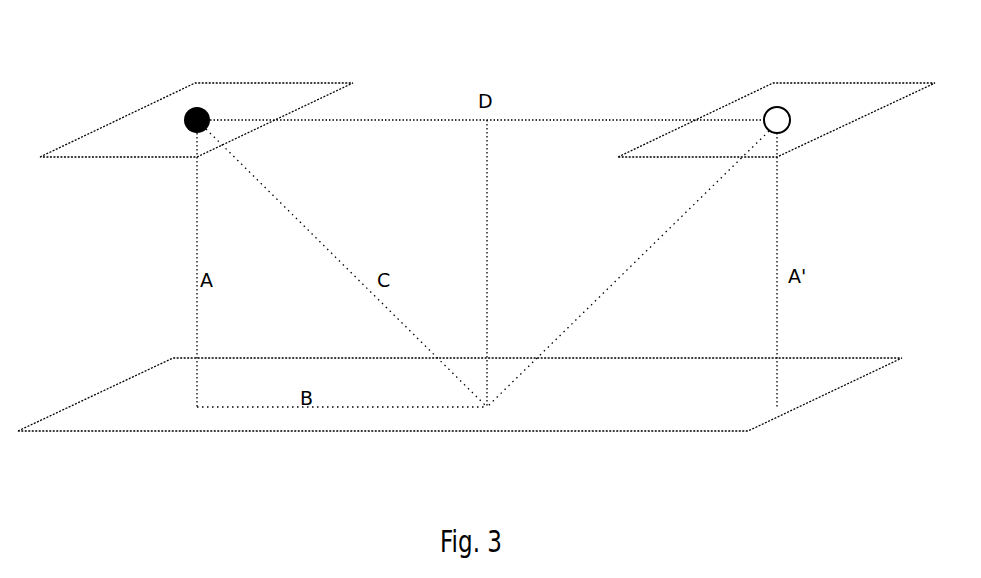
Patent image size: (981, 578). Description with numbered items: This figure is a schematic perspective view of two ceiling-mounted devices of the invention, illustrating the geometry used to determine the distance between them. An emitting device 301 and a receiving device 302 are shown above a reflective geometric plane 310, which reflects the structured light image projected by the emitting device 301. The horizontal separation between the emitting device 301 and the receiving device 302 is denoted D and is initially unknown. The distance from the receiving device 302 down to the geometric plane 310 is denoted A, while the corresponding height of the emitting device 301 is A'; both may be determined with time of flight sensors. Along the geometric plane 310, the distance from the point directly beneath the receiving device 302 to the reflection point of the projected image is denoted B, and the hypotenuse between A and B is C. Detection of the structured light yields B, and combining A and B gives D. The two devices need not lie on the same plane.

The emitting device 301 is at (776, 88).
The receiving device 302 is at (196, 93).
The geometric plane 310 is at (460, 394).